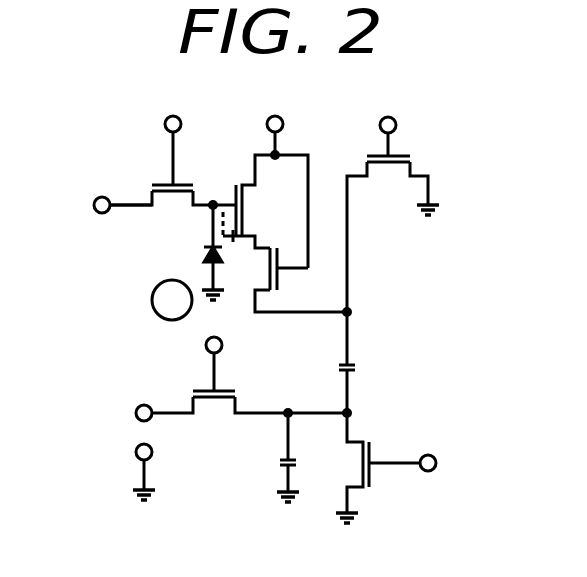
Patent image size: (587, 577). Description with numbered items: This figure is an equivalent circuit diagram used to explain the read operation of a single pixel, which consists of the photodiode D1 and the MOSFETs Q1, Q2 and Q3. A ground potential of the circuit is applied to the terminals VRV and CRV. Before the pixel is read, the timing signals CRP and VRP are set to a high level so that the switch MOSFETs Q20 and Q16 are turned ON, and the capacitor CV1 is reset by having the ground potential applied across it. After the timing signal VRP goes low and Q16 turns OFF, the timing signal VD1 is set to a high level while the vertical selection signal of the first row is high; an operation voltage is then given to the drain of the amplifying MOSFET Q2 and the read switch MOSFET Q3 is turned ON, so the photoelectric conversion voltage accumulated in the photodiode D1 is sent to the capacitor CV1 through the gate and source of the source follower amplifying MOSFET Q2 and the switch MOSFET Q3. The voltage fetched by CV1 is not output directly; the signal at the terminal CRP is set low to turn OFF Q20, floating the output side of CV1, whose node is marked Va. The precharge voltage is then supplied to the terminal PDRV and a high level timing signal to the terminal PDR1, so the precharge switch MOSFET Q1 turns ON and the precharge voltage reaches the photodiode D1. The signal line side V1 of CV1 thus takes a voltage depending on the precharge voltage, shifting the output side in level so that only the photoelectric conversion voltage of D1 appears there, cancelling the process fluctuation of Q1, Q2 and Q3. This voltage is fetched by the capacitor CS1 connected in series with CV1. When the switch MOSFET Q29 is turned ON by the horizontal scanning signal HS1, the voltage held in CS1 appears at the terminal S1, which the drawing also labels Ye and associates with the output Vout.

The switch MOSFET Q1 is at (173, 210).
The amplifying MOSFET Q2 is at (265, 211).
The switch MOSFET Q3 is at (289, 280).
The switch MOSFET Q16 is at (393, 234).
The switch MOSFET Q20 is at (367, 468).
The switch MOSFET Q29 is at (249, 420).
The photodiode D1 is at (199, 252).
The capacitor CV1 is at (326, 362).
The capacitor CS1 is at (271, 457).
The terminal PDR1 is at (163, 134).
The timing signal VD1 is at (294, 121).
The timing signal VRP is at (390, 115).
The terminal PDRV is at (93, 205).
The terminal VRV is at (432, 250).
The signal line side V1 is at (362, 312).
The node Va is at (330, 402).
The horizontal scanning signal HS1 is at (235, 359).
The terminal S1 is at (126, 397).
The Vout terminal Vout is at (112, 458).
The timing signal CRP is at (429, 486).
The terminal CRV is at (315, 539).
The Ye color signal Ye is at (172, 300).